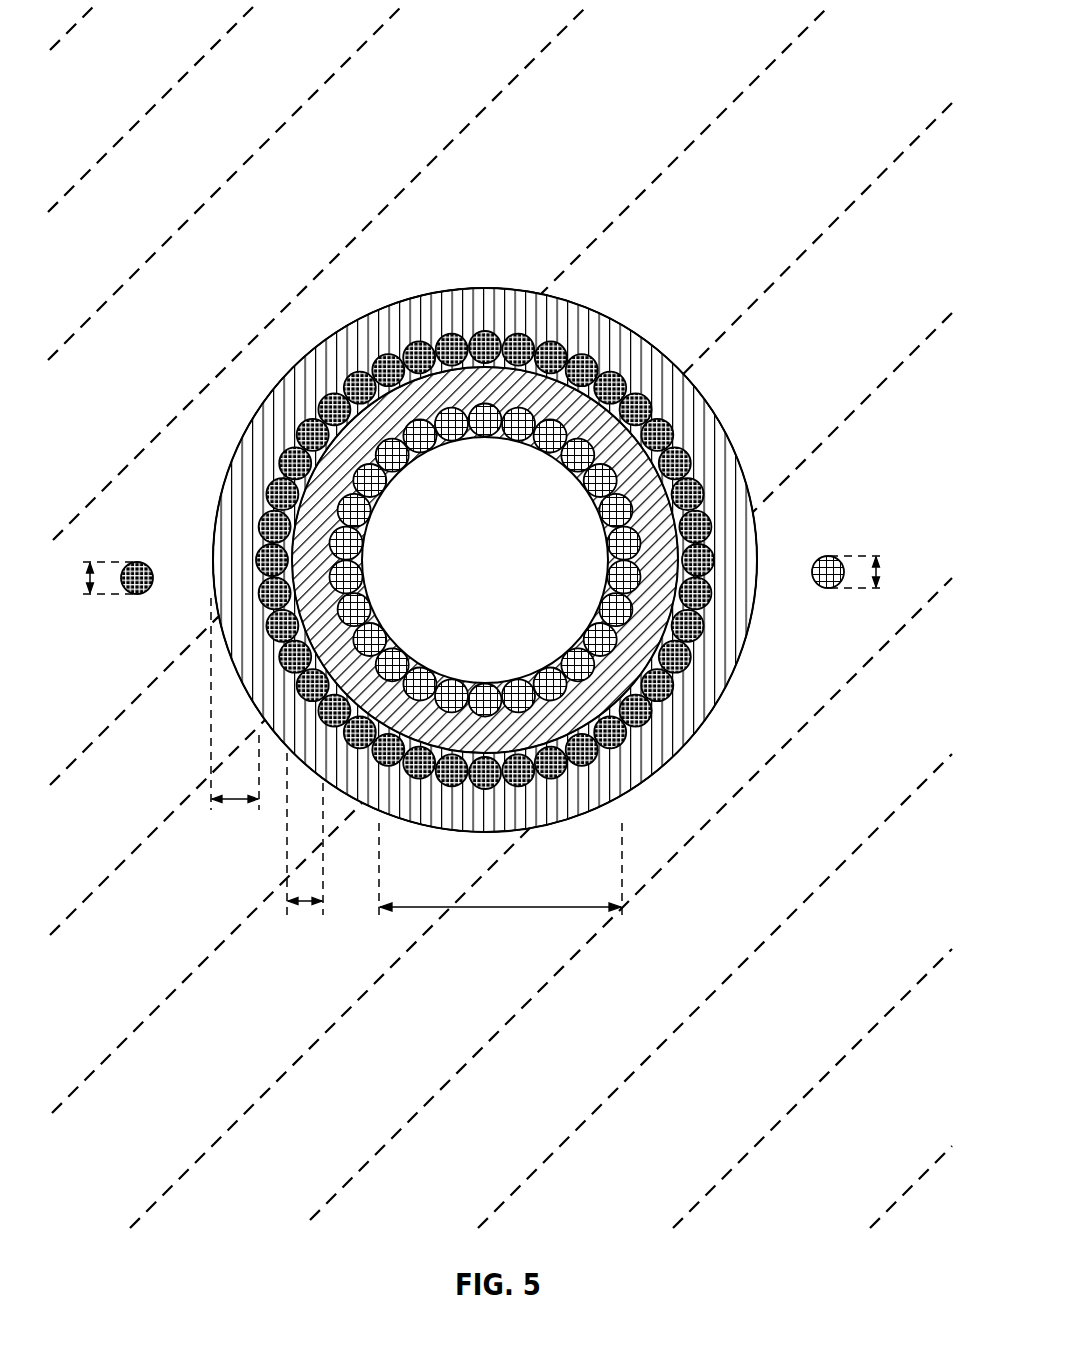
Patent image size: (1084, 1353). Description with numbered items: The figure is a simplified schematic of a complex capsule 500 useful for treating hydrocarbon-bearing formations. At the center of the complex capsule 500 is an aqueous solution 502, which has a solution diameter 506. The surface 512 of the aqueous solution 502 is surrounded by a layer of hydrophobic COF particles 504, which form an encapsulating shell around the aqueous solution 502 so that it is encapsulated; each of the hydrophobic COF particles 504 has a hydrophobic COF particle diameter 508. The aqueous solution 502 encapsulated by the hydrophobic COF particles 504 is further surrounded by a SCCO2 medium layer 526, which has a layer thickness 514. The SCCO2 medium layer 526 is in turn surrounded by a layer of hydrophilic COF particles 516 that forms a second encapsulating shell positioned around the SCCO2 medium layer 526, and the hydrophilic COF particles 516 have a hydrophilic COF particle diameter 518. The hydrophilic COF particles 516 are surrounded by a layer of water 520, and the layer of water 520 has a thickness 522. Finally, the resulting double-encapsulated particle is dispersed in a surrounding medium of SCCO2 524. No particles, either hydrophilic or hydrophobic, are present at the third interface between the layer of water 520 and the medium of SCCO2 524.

The complex capsule 500 is at (252, 200).
The aqueous solution 502 is at (510, 566).
The hydrophobic COF particles 504 is at (640, 392).
The solution diameter 506 is at (498, 908).
The hydrophobic COF particle diameter 508 is at (878, 574).
The surface of the aqueous solution 512 is at (678, 440).
The layer thickness 514 is at (307, 907).
The hydrophilic COF particles 516 is at (296, 432).
The hydrophilic COF particle diameter 518 is at (88, 578).
The layer of water 520 is at (343, 350).
The thickness 522 is at (232, 805).
The medium of SCCO2 524 is at (643, 111).
The SCCO2 medium layer 526 is at (607, 318).